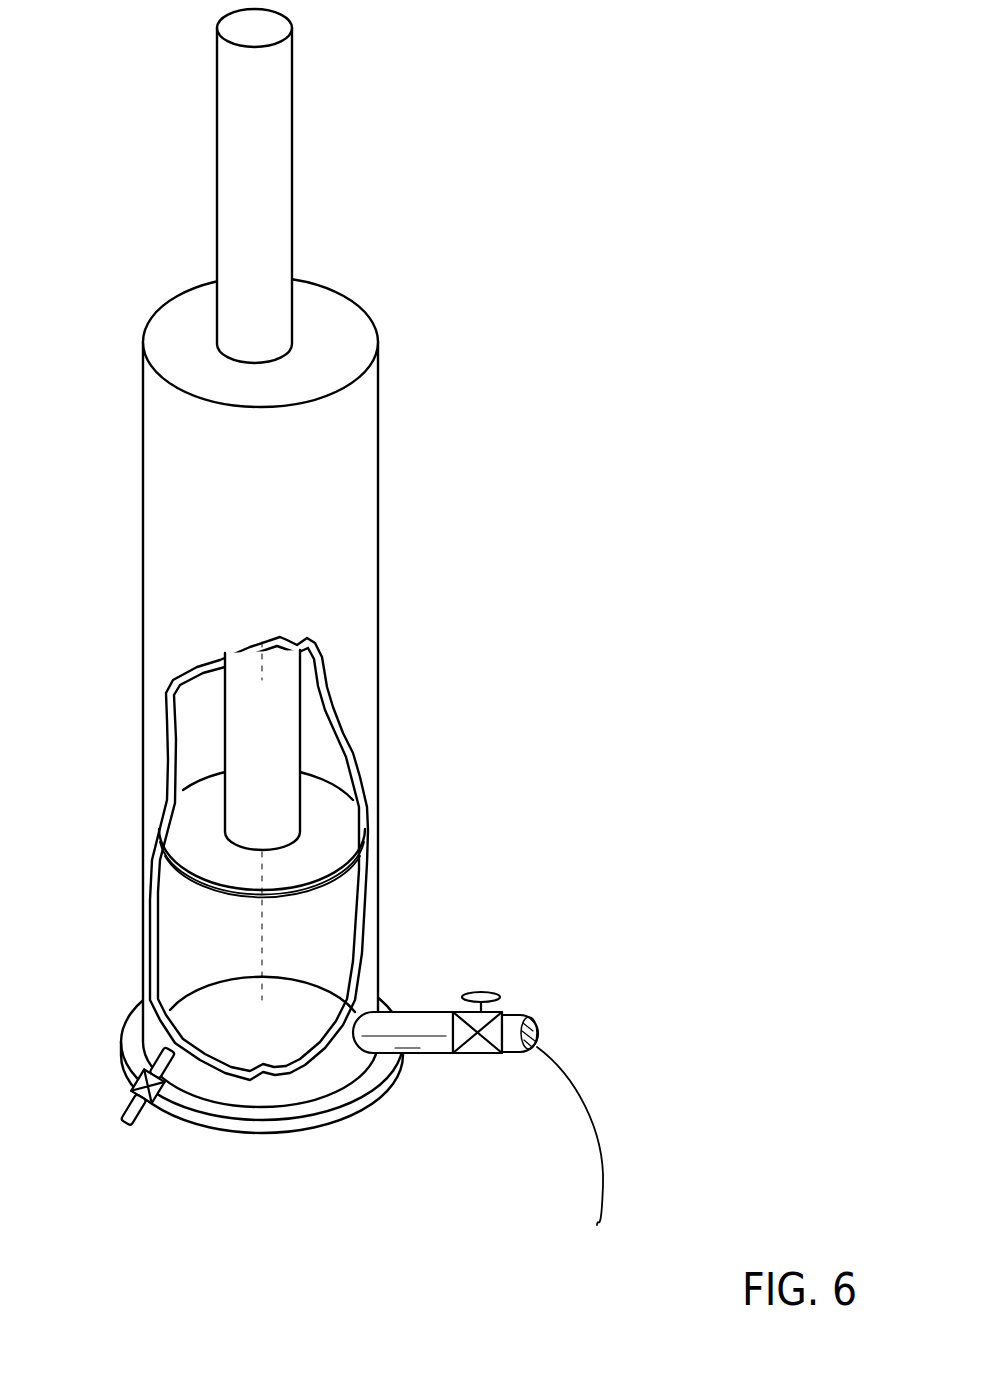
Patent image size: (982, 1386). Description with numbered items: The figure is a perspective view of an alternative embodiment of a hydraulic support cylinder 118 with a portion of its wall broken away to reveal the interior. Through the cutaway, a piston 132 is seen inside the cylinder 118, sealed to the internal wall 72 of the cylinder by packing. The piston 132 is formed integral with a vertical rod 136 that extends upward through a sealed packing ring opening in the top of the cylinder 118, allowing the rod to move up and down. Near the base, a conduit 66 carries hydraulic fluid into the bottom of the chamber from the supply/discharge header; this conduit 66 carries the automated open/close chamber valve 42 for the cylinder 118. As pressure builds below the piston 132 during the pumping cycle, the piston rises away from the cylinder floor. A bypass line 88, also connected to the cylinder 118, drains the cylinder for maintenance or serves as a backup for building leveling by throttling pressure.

The hydraulic support cylinder 118 is at (382, 580).
The vertical rod 136 is at (282, 206).
The internal wall 72 is at (259, 858).
The piston 132 is at (340, 848).
The automated chamber valve 42 is at (470, 1066).
The bypass line 88 is at (138, 1111).
The conduit 66 is at (468, 1170).